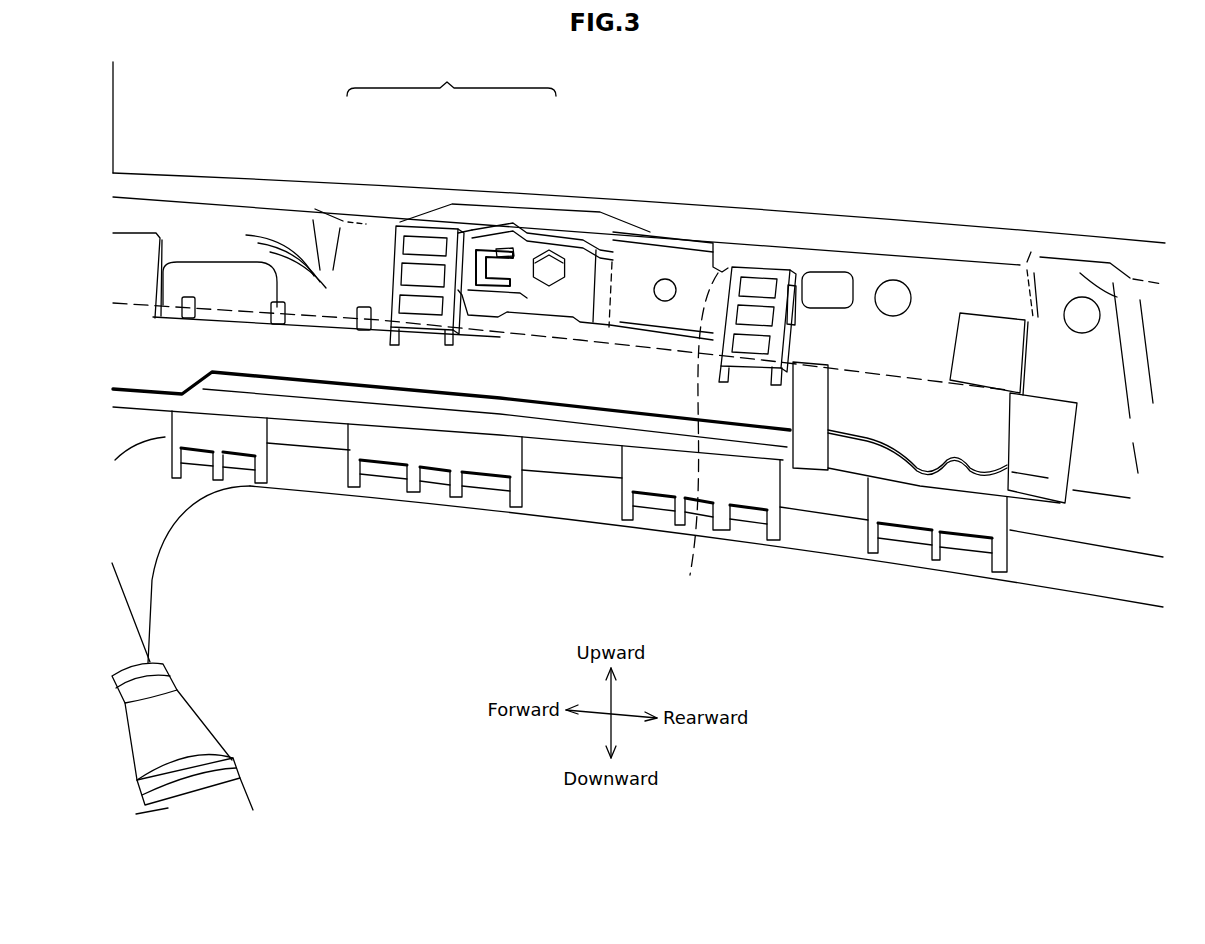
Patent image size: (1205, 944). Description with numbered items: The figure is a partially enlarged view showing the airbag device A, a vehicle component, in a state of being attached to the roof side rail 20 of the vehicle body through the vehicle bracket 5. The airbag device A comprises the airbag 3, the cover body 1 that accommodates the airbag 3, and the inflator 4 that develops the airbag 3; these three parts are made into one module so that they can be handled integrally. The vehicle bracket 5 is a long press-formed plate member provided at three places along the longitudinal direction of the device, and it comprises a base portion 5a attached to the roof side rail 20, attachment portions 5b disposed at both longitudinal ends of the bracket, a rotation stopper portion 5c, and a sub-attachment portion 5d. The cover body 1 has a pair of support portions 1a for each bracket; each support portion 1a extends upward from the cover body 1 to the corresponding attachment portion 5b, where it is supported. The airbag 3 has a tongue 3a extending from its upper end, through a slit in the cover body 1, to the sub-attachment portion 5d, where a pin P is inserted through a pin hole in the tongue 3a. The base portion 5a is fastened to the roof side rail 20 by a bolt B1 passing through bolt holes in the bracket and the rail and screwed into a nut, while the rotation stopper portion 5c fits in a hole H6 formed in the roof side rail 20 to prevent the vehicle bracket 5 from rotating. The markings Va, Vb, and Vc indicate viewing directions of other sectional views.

The cover body 1 is at (227, 333).
The support portion 1a is at (765, 267).
The airbag 3 is at (310, 412).
The tongue 3a is at (698, 435).
The inflator 4 is at (205, 717).
The vehicle bracket 5 is at (530, 199).
The base portion 5a is at (525, 232).
The attachment portion 5b is at (389, 270).
The rotation stopper portion 5c is at (478, 255).
The sub-attachment portion 5d is at (625, 240).
The roof side rail 20 is at (1117, 297).
The airbag device A is at (907, 363).
The bolt B1 is at (556, 280).
The hole H6 is at (497, 252).
The pin P is at (667, 280).
The view direction a Va is at (808, 207).
The view direction b Vb is at (712, 197).
The view direction c Vc is at (587, 192).